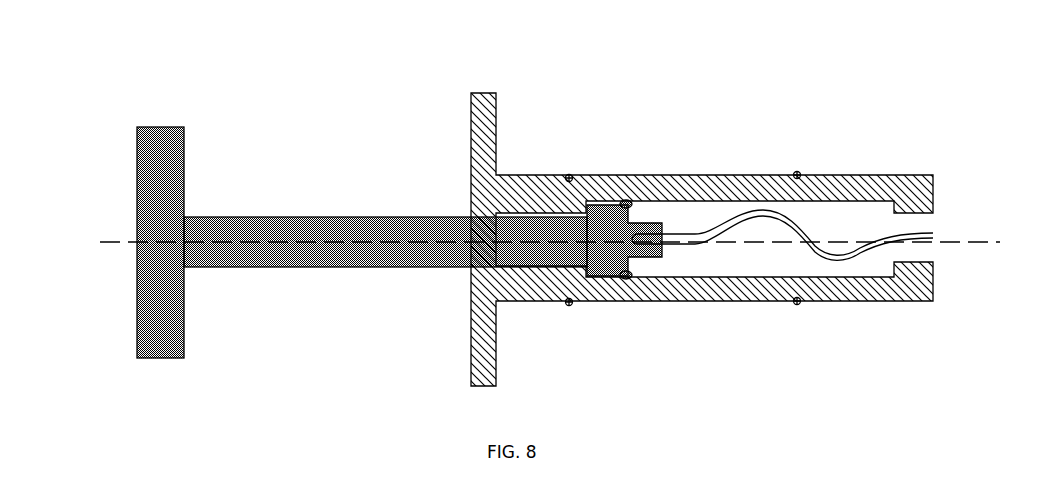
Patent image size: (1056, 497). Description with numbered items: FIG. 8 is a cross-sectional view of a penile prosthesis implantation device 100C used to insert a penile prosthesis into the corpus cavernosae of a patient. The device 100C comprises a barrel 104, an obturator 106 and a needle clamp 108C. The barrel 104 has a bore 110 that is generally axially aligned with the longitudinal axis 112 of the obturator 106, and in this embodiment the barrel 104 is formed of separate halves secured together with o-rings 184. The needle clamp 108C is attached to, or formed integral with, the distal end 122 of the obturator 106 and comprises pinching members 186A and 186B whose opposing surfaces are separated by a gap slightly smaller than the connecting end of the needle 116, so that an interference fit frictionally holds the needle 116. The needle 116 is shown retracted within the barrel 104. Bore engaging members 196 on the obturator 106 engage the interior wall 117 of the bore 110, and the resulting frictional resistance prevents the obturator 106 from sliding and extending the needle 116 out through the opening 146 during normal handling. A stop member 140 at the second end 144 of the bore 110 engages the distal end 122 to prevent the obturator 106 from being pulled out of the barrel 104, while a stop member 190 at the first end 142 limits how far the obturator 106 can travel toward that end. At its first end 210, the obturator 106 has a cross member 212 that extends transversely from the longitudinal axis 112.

The penile prosthesis implantation device 100C is at (125, 94).
The first end of the obturator 210 is at (137, 151).
The cross member 212 is at (184, 155).
The longitudinal axis 112 is at (101, 241).
The obturator 106 is at (305, 268).
The barrel 104 is at (548, 176).
The o-rings 184 is at (569, 174).
The distal end of the obturator 122 is at (603, 204).
The bore engaging members 196 is at (626, 201).
The pinching member 186A is at (655, 222).
The pinching member 186B is at (653, 256).
The needle clamp 108C is at (662, 220).
The needle 116 is at (790, 218).
The interior wall of the bore 117 is at (765, 277).
The bore 110 is at (872, 210).
The opening 146 is at (925, 218).
The first end of the bore 142 is at (930, 265).
The stop member 190 is at (897, 265).
The stop member 140 is at (592, 277).
The second end of the bore 144 is at (537, 300).